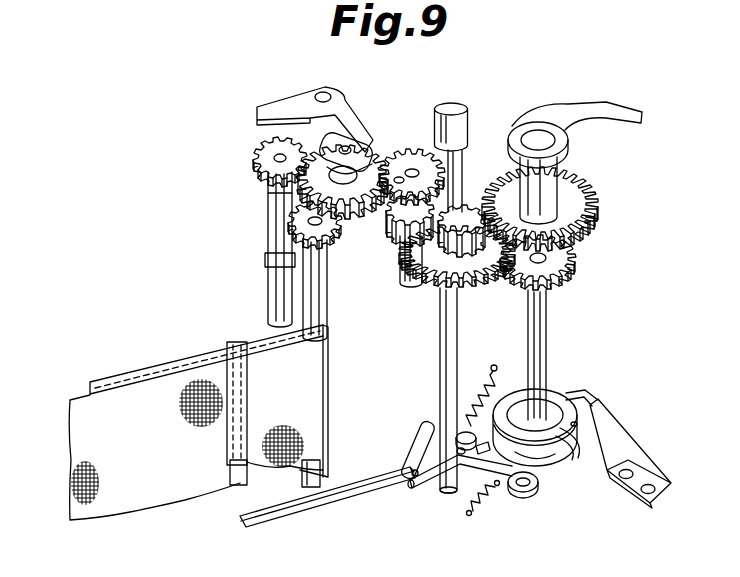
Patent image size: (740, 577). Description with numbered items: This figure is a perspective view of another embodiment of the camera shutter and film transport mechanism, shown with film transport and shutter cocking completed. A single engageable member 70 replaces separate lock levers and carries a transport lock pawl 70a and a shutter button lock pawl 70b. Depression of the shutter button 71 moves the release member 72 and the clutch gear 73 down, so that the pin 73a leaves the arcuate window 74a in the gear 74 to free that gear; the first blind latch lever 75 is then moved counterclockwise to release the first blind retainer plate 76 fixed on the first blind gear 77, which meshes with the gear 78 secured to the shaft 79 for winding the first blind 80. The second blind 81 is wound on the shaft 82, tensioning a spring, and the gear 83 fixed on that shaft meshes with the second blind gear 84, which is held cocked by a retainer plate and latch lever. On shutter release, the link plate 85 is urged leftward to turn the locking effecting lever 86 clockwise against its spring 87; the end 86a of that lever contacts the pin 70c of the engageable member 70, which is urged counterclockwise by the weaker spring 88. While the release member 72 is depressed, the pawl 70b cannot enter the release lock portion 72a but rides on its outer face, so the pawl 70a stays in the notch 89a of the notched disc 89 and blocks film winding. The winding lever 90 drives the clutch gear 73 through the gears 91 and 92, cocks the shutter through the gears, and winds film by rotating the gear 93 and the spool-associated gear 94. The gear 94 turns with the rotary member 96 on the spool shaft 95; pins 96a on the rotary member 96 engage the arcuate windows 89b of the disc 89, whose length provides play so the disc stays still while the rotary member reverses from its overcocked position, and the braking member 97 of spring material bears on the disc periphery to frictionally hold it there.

The engageable member 70 is at (522, 494).
The transport lock pawl 70a is at (462, 432).
The shutter button lock pawl 70b is at (452, 480).
The pin 70c is at (478, 447).
The shutter button 71 is at (452, 104).
The release member 72 is at (440, 318).
The release lock portion 72a is at (452, 498).
The clutch gear 73 is at (392, 250).
The pin 73a is at (378, 221).
The gear 74 is at (415, 143).
The arcuate window 74a is at (394, 170).
The first blind latch lever 75 is at (300, 98).
The first blind retainer plate 76 is at (350, 142).
The first blind gear 77 is at (322, 142).
The gear 78 is at (262, 146).
The shaft 79 is at (268, 289).
The first blind 80 is at (194, 488).
The second blind 81 is at (322, 396).
The shaft 82 is at (300, 481).
The gear 83 is at (268, 222).
The second blind gear 84 is at (268, 194).
The link plate 85 is at (335, 506).
The locking effecting lever 86 is at (410, 460).
The end 86a is at (460, 450).
The spring 87 is at (490, 392).
The spring 88 is at (490, 498).
The notched disc 89 is at (552, 395).
The notch 89a is at (548, 468).
The arcuate window 89b is at (576, 398).
The winding lever 90 is at (585, 105).
The gear 91 is at (596, 196).
The gear 92 is at (466, 205).
The gear 93 is at (474, 284).
The spool-associated gear 94 is at (572, 262).
The spool shaft 95 is at (547, 318).
The rotary member 96 is at (574, 450).
The pins 96a is at (575, 425).
The braking member 97 is at (615, 412).